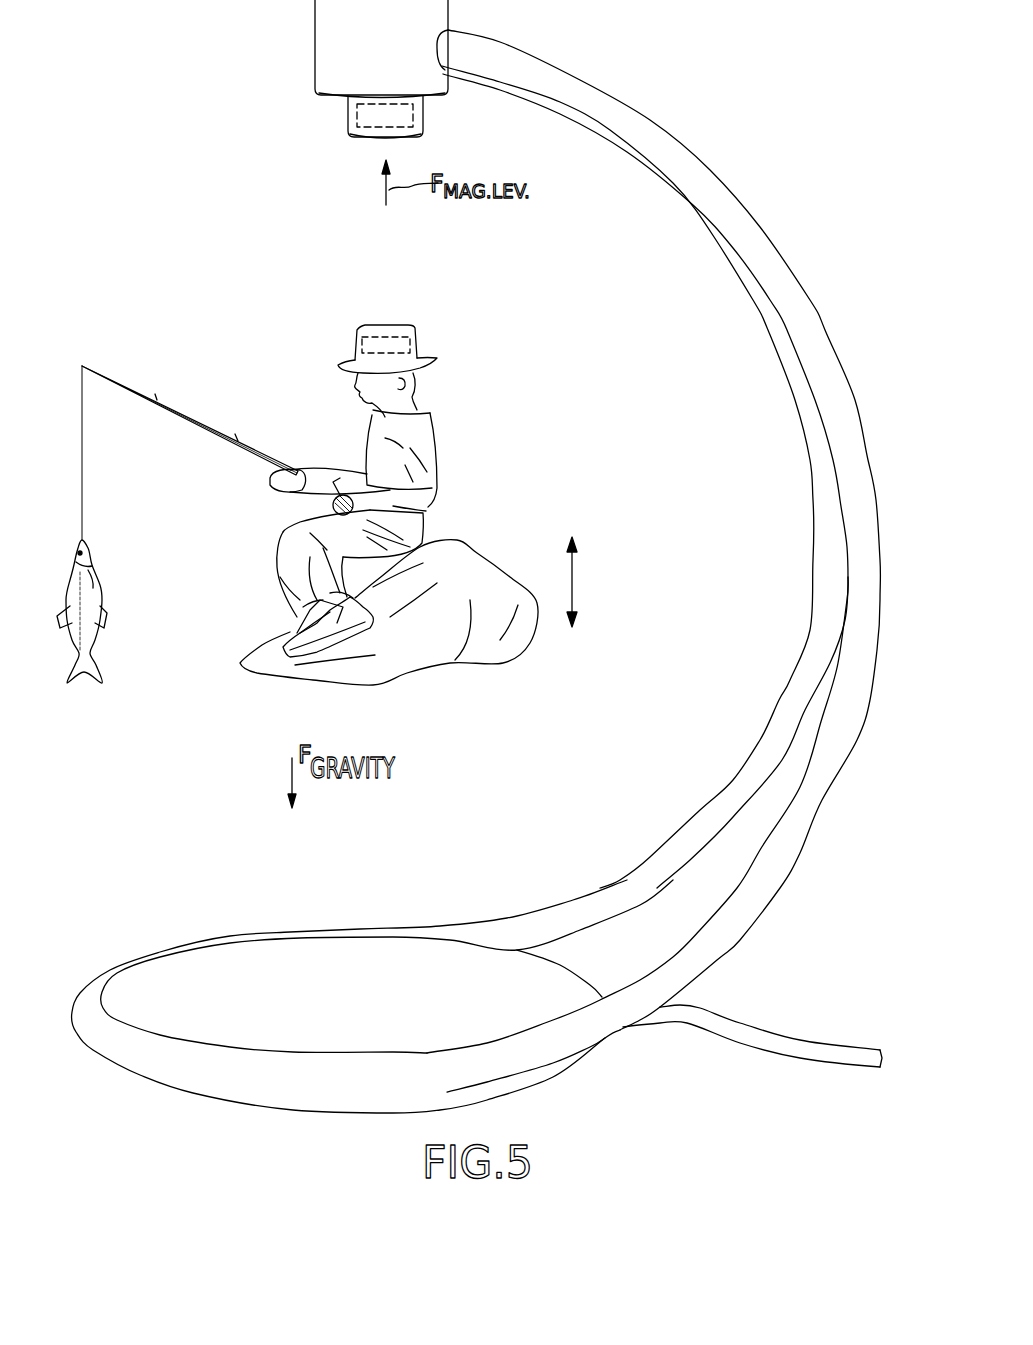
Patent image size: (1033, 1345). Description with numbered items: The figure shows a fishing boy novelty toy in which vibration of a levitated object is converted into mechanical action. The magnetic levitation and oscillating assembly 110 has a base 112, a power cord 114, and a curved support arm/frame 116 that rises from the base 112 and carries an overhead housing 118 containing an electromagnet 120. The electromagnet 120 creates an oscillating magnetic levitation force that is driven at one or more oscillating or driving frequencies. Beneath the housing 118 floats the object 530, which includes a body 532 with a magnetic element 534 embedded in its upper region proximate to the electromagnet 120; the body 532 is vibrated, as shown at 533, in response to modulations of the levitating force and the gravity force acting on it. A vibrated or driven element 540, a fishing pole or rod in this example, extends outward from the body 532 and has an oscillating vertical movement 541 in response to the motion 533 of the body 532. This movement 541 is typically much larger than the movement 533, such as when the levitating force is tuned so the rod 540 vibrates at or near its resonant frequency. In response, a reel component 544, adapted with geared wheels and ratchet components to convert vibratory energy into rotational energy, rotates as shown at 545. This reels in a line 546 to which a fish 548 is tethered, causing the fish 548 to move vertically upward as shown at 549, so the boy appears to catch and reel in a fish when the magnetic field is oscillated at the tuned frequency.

The magnetic levitation and oscillating assembly 110 is at (762, 142).
The base 112 is at (216, 1097).
The power cord 114 is at (743, 1045).
The support arm/frame 116 is at (650, 121).
The overhead housing 118 is at (450, 13).
The electromagnet 120 is at (350, 115).
The object 530 is at (648, 444).
The body 532 is at (436, 435).
The vibration of the body 533 is at (575, 578).
The magnetic element 534 is at (440, 338).
The vibrated or driven element 540 is at (155, 397).
The oscillating vertical movement 541 is at (217, 460).
The reel component 544 is at (303, 458).
The rotation of the reel component 545 is at (345, 460).
The line 546 is at (83, 455).
The fish 548 is at (101, 606).
The vertical upward movement of the fish 549 is at (95, 504).